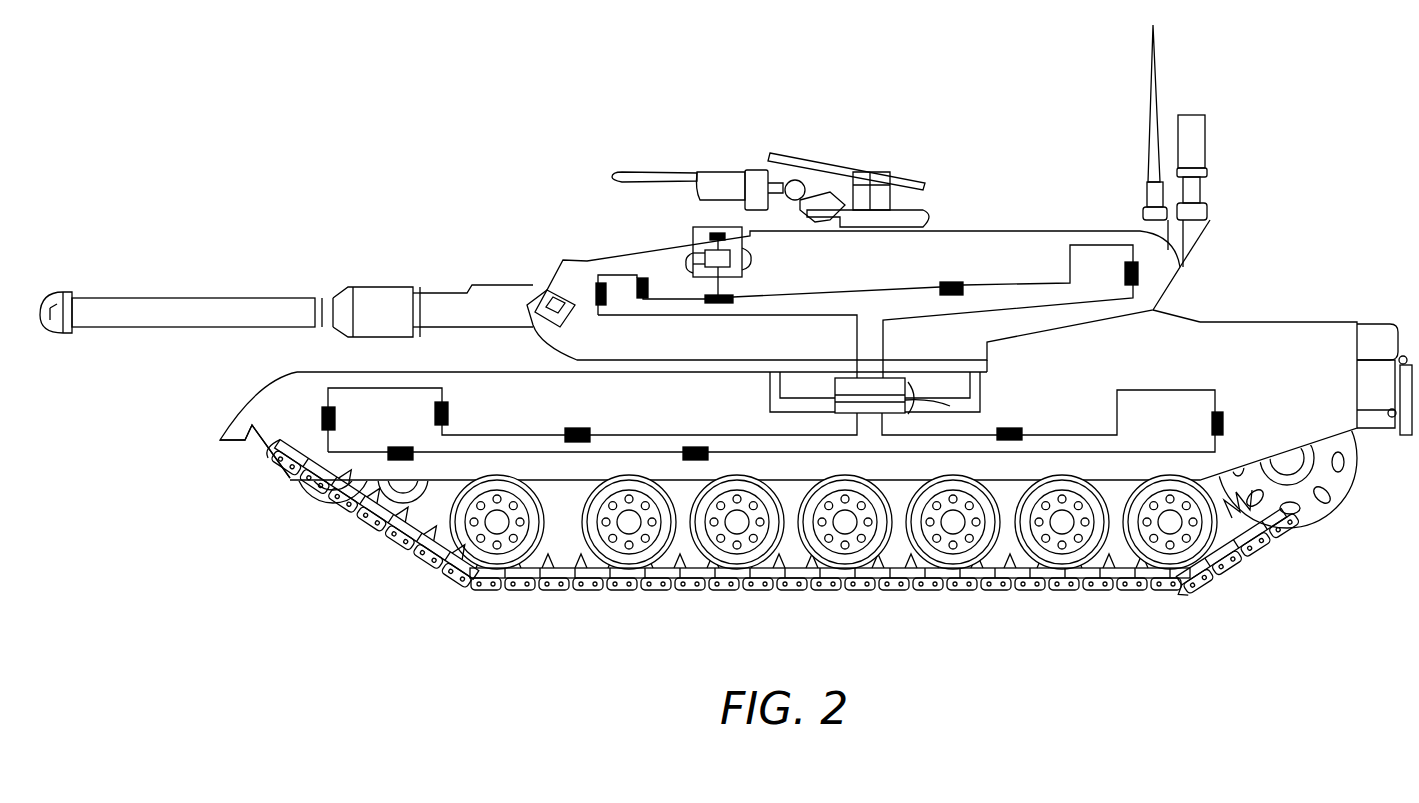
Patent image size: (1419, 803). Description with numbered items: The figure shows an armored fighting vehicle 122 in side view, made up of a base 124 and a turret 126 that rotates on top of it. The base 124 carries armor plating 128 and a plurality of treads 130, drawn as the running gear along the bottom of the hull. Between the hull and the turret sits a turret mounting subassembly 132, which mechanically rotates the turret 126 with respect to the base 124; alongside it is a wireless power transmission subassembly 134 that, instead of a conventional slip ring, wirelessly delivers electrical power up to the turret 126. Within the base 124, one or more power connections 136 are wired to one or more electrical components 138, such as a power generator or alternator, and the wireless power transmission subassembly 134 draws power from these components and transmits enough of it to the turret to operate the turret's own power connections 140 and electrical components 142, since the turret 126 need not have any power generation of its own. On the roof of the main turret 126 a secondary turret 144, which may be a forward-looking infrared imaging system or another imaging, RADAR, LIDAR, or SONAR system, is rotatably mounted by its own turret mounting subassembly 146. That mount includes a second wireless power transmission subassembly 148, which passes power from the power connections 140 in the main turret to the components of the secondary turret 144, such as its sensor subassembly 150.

The armored fighting vehicle 122 is at (448, 70).
The base 124 is at (273, 395).
The turret 126 is at (585, 275).
The armor plating 128 is at (289, 433).
The treads 130 is at (372, 551).
The turret mounting subassembly 132 is at (997, 412).
The wireless power transmission subassembly 134 is at (913, 400).
The power connections 136 is at (1185, 452).
The electrical components 138 is at (1224, 422).
The power connections 140 is at (1003, 279).
The electrical components 142 is at (953, 282).
The secondary turret 144 is at (710, 227).
The turret mounting subassembly 146 is at (688, 258).
The wireless power transmission subassembly 148 is at (749, 257).
The sensor subassembly 150 is at (693, 232).